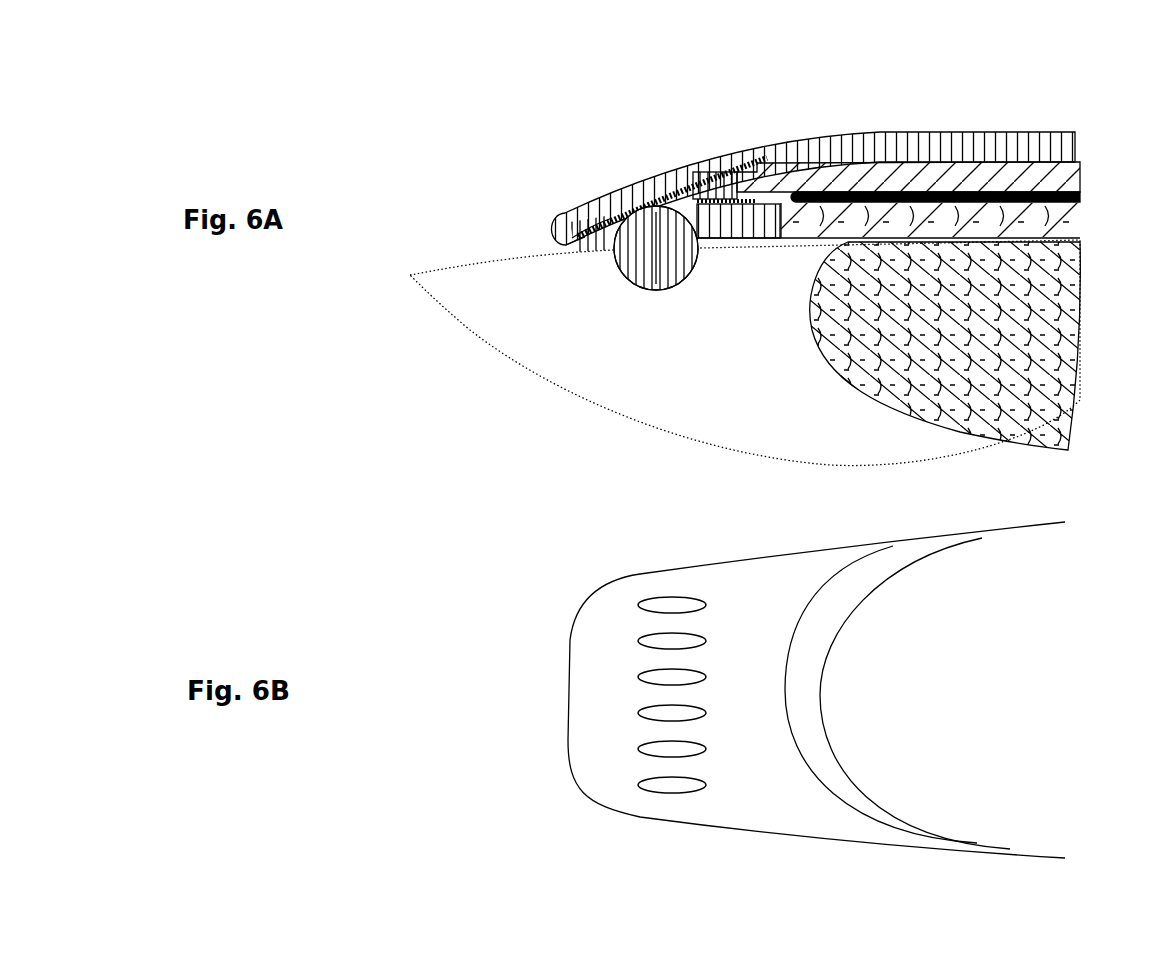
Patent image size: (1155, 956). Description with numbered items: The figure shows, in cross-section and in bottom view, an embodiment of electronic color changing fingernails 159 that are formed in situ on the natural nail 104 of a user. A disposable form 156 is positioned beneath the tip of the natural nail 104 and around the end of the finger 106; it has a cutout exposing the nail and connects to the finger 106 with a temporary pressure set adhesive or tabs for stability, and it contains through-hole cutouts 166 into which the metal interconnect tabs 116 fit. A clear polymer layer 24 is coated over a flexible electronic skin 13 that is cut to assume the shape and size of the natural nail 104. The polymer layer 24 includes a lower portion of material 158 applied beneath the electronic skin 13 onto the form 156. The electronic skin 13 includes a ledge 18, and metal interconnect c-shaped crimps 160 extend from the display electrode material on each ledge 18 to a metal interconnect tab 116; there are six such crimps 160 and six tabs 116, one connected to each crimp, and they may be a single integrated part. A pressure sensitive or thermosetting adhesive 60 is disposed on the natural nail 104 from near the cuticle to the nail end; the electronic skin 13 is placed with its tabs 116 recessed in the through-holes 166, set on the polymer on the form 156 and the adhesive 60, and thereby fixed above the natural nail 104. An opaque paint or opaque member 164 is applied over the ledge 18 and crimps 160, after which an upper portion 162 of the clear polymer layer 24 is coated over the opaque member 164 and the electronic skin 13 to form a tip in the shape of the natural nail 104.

In FIG. 6A, the electronic color changing fingernails 159 is at (666, 38).
In FIG. 6A, the metal interconnect c-shaped crimps 160 is at (690, 190).
In FIG. 6A, the ledge 18 is at (727, 190).
In FIG. 6A, the electronic skin 13 is at (830, 187).
In FIG. 6A, the pressure sensitive or thermosetting adhesive 60 is at (968, 192).
In FIG. 6A, the upper portion of the clear polymer layer 162 is at (1022, 148).
In FIG. 6A, the opaque paint or opaque member 164 is at (605, 222).
In FIG. 6A, the disposable form 156 is at (497, 290).
In FIG. 6A, the clear polymer layer 24 is at (566, 238).
In FIG. 6B, the clear polymer layer 24 is at (580, 686).
In FIG. 6A, the lower portion of material 158 is at (600, 240).
In FIG. 6A, the through-hole cutouts 166 is at (630, 273).
In FIG. 6A, the metal interconnect tabs 116 is at (657, 273).
In FIG. 6B, the metal interconnect tabs 116 is at (658, 604).
In FIG. 6A, the natural nail 104 is at (888, 200).
In FIG. 6B, the natural nail 104 is at (888, 573).
In FIG. 6A, the finger 106 is at (1025, 408).
In FIG. 6B, the finger 106 is at (1025, 632).